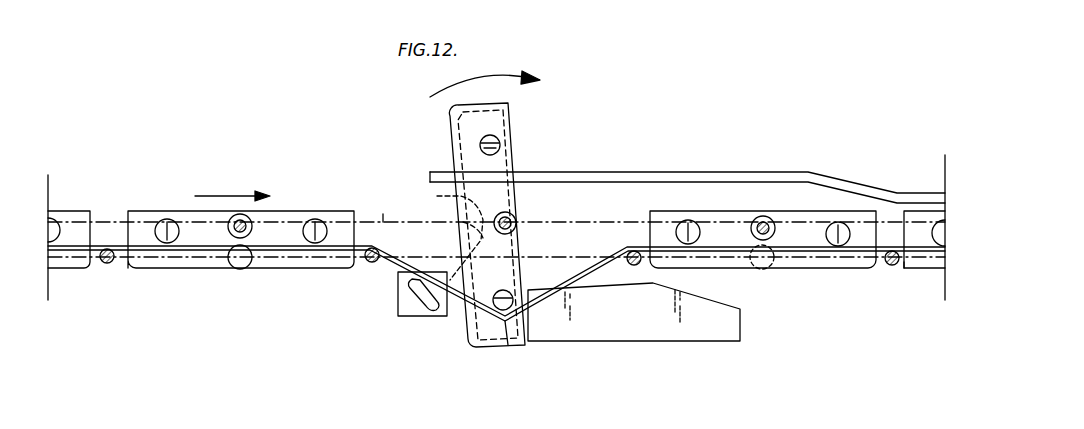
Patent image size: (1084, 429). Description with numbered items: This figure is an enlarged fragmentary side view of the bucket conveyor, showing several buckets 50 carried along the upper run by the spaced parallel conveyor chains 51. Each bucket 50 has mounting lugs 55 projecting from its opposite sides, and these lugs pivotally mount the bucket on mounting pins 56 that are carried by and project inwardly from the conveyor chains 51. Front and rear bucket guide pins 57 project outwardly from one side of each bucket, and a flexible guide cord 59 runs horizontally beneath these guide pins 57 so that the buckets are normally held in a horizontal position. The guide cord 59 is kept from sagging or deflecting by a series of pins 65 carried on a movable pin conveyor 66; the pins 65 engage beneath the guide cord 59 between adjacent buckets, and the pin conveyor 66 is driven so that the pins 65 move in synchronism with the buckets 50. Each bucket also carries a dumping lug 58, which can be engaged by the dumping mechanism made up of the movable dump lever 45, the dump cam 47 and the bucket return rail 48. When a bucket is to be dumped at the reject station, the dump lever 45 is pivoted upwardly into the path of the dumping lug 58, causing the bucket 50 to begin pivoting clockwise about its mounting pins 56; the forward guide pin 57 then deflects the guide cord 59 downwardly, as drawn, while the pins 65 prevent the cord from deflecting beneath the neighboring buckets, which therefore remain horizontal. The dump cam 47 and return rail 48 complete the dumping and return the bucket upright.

The dump lever 45 is at (460, 252).
The dump cam 47 is at (700, 334).
The bucket return rail 48 is at (710, 172).
The bucket 50 is at (128, 212).
The conveyor chain 51 is at (384, 214).
The mounting lug 55 is at (512, 218).
The mounting pin 56 is at (249, 222).
The bucket guide pin 57 is at (167, 219).
The dumping lug 58 is at (234, 266).
The flexible guide cord 59 is at (508, 346).
The pin 65 is at (106, 264).
The pin conveyor 66 is at (826, 268).